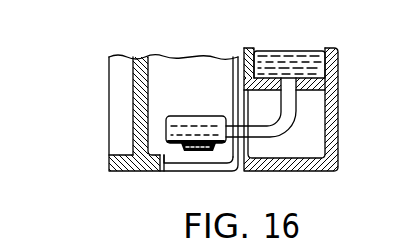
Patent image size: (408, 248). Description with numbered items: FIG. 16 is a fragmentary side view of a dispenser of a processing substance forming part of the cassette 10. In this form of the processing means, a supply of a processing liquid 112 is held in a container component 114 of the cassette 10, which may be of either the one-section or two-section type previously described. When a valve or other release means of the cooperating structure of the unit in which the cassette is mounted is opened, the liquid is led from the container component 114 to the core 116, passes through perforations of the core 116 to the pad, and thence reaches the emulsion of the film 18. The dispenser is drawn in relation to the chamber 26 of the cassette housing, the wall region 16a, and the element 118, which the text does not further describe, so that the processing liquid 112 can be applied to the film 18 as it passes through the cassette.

The cassette 10 is at (94, 136).
The second partially open chamber 26 is at (162, 79).
The insulated wall 16a is at (138, 106).
The processing liquid 112 is at (274, 54).
The container component 114 is at (321, 71).
The core 116 is at (203, 128).
The channel 118 is at (173, 147).
The film 18 is at (194, 152).